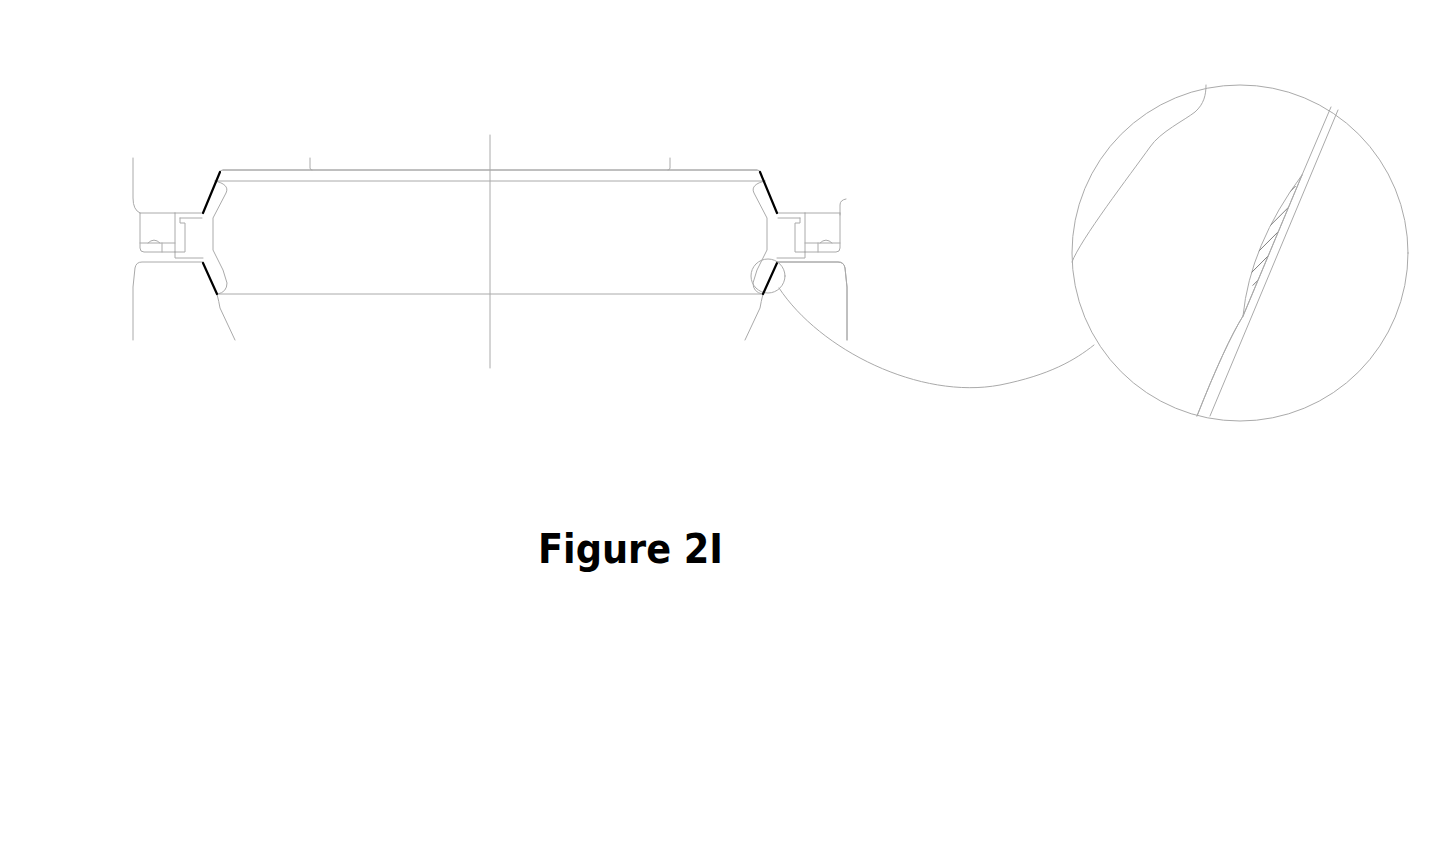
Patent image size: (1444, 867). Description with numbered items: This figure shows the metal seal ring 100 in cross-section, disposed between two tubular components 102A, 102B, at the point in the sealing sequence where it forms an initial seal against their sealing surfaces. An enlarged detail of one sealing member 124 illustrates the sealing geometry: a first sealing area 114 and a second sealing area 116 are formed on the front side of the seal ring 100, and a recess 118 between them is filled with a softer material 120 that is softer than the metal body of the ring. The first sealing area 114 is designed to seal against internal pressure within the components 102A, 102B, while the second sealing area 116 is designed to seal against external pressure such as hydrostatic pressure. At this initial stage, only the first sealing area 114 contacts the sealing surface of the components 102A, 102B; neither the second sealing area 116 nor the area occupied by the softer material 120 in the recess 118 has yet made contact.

The metal seal ring 100 is at (778, 232).
The first tubular component 102A is at (812, 190).
The second tubular component 102B is at (827, 300).
The first sealing area 114 is at (1215, 355).
The second sealing area 116 is at (1313, 130).
The recess 118 is at (1268, 227).
The softer material 120 is at (1252, 283).
The sealing member 124 is at (1162, 193).